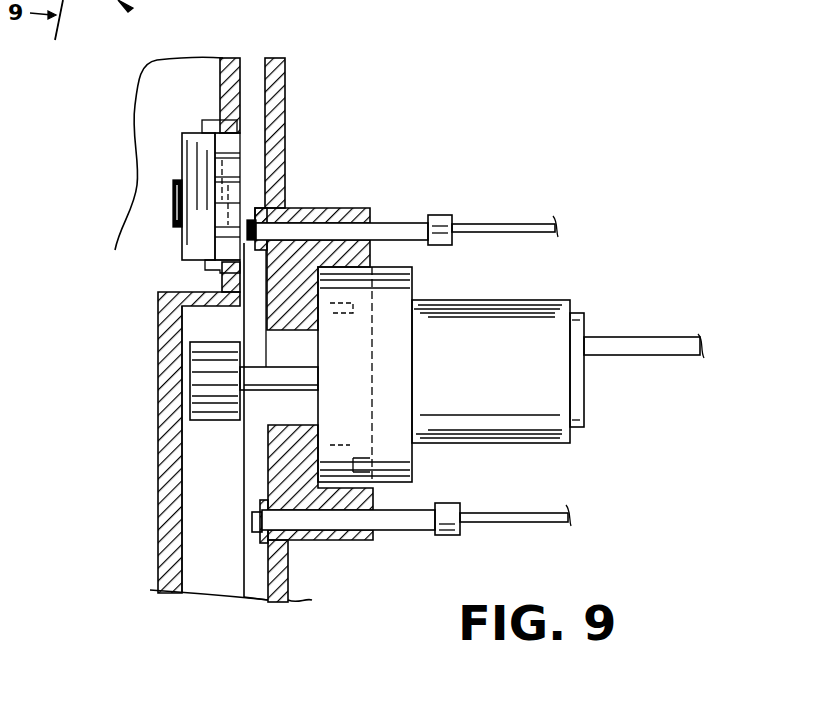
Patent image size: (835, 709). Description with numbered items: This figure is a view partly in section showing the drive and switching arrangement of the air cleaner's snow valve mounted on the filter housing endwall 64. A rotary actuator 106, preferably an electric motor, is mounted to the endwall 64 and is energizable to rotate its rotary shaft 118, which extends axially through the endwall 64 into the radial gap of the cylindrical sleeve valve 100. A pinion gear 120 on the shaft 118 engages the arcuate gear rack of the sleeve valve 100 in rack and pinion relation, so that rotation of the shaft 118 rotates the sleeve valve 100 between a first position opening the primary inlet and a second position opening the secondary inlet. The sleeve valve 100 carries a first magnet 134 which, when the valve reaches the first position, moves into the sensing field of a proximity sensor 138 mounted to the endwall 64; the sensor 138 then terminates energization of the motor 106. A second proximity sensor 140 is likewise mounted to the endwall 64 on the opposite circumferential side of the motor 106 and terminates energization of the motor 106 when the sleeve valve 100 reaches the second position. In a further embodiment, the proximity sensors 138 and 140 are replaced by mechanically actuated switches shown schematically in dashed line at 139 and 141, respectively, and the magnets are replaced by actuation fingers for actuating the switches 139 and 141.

The endwall 64 is at (284, 92).
The sleeve valve 100 is at (237, 26).
The rotary actuator 106 is at (528, 332).
The rotary shaft 118 is at (265, 392).
The pinion gear 120 is at (203, 343).
The first magnet 134 is at (193, 147).
The proximity sensor 138 is at (403, 228).
The mechanically actuated switch 139 is at (250, 212).
The proximity sensor 140 is at (408, 528).
The mechanically actuated switch 141 is at (262, 540).